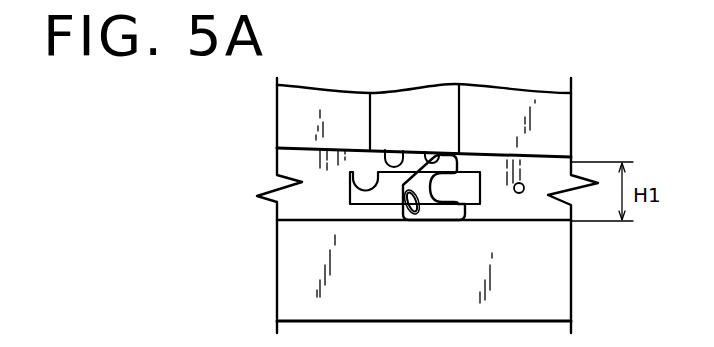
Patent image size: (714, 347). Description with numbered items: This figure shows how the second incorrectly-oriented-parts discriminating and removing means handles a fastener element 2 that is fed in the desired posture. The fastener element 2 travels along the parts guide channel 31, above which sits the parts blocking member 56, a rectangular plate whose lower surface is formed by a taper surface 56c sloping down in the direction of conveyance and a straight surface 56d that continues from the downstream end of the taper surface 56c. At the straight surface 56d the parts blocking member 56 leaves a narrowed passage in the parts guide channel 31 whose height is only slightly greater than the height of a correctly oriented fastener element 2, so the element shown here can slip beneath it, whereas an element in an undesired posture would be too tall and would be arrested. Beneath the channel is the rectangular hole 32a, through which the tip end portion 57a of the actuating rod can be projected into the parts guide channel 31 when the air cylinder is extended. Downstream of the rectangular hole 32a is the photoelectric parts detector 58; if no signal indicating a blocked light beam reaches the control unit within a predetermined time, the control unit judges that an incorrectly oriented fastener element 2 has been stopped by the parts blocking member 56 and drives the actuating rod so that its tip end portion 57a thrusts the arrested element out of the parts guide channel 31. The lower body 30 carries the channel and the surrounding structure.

The fastener element 2 is at (428, 210).
The lower body member 30 is at (542, 292).
The parts guide channel 31 is at (295, 205).
The rectangular hole 32a is at (353, 186).
The parts blocking member 56 is at (426, 103).
The taper surface 56c is at (389, 149).
The straight surface 56d is at (427, 148).
The tip end portion of the actuating rod 57a is at (379, 205).
The photoelectric parts detector 58 is at (520, 194).